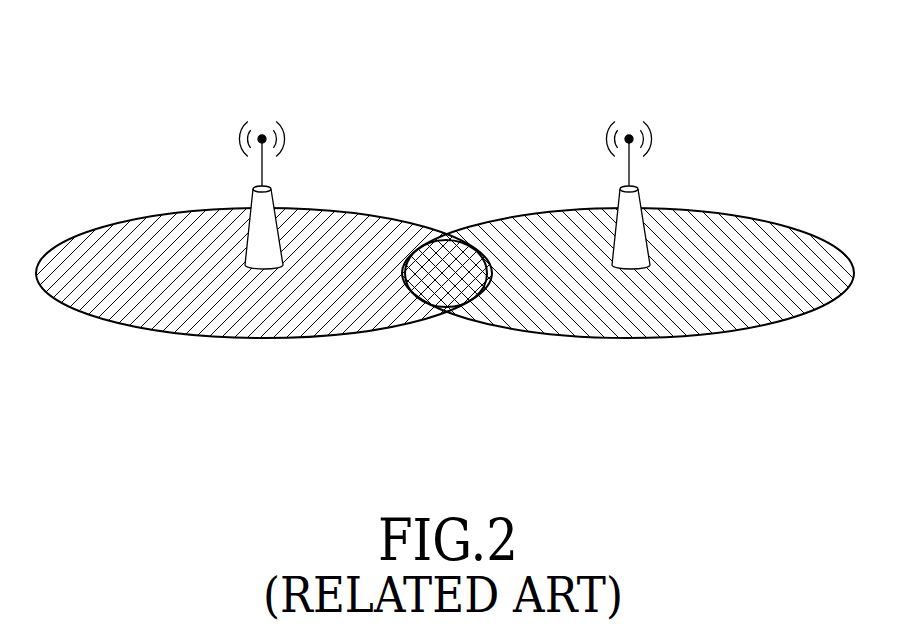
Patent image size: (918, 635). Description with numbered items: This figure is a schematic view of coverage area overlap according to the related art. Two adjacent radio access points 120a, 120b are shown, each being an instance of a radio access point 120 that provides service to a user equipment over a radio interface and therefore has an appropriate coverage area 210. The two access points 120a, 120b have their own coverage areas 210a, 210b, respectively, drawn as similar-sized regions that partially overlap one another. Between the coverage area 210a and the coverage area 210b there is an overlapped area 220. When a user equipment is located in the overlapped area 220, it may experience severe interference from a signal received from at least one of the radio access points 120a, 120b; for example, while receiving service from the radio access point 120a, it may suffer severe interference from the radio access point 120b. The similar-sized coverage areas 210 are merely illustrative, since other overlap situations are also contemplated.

The coverage area 210 is at (445, 193).
The coverage area 210a is at (145, 214).
The coverage area 210b is at (774, 222).
The overlapped area 220 is at (441, 262).
The radio access point 120 is at (444, 271).
The radio access point 120a is at (260, 263).
The radio access point 120b is at (634, 268).